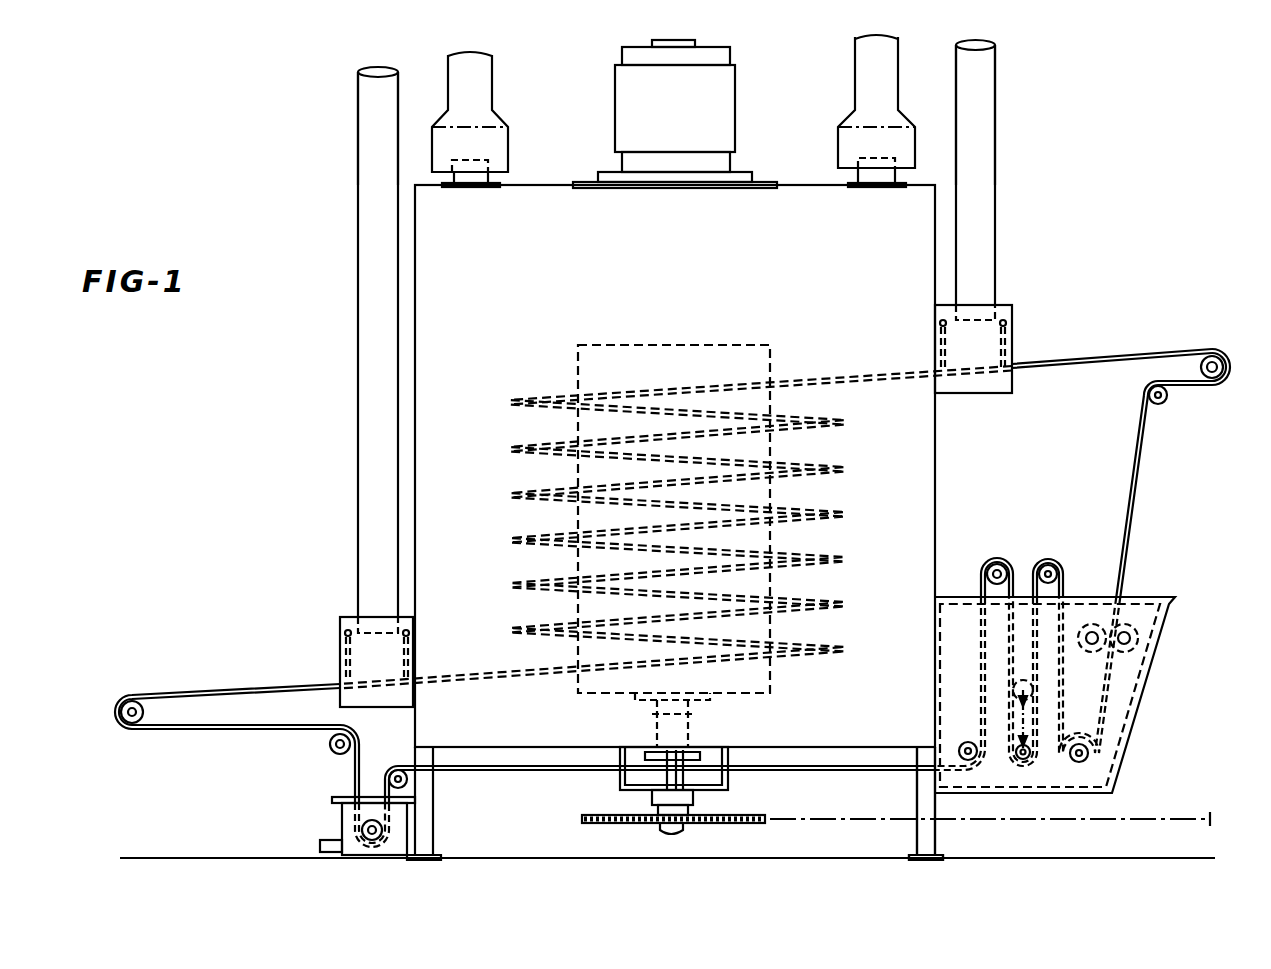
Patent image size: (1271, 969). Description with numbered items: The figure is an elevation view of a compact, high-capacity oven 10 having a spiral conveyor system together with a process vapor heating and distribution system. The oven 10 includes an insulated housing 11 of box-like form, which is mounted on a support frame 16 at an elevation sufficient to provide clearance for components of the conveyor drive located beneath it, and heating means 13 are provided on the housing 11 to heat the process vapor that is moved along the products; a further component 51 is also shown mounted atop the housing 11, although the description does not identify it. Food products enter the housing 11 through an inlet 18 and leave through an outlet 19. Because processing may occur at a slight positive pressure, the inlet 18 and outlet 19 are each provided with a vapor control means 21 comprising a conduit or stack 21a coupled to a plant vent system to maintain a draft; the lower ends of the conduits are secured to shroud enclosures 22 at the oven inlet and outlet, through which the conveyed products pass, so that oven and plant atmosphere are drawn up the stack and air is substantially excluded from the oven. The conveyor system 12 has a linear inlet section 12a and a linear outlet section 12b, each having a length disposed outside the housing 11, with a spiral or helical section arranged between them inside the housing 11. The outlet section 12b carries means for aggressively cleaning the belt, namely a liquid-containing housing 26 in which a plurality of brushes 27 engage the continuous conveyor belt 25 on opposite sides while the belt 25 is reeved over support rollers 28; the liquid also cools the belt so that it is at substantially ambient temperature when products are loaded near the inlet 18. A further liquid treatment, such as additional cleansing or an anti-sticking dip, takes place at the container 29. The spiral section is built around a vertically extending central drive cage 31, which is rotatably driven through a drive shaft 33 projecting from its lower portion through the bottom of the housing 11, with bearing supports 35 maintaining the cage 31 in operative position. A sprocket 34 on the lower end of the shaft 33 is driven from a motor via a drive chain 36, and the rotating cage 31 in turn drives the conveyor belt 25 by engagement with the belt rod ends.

The oven 10 is at (1050, 185).
The housing 11 is at (529, 190).
The conveyor system 12 is at (1108, 360).
The linear inlet section 12a is at (222, 696).
The linear outlet section 12b is at (1190, 357).
The heating means 13 is at (494, 78).
The support frame 16 is at (940, 856).
The inlet 18 is at (341, 670).
The outlet 19 is at (1014, 338).
The vapor control means 21 is at (360, 430).
The conduit or stack 21a is at (360, 128).
The shroud enclosure 22 is at (341, 622).
The conveyor belt 25 is at (1137, 530).
The liquid-containing housing 26 is at (1148, 680).
The brushes 27 is at (1128, 624).
The support rollers 28 is at (990, 560).
The container 29 is at (344, 824).
The central drive cage 31 is at (578, 350).
The drive shaft 33 is at (656, 716).
The sprocket 34 is at (742, 825).
The bearing supports 35 is at (690, 745).
The drive chain 36 is at (1146, 820).
The motor 51 is at (733, 100).